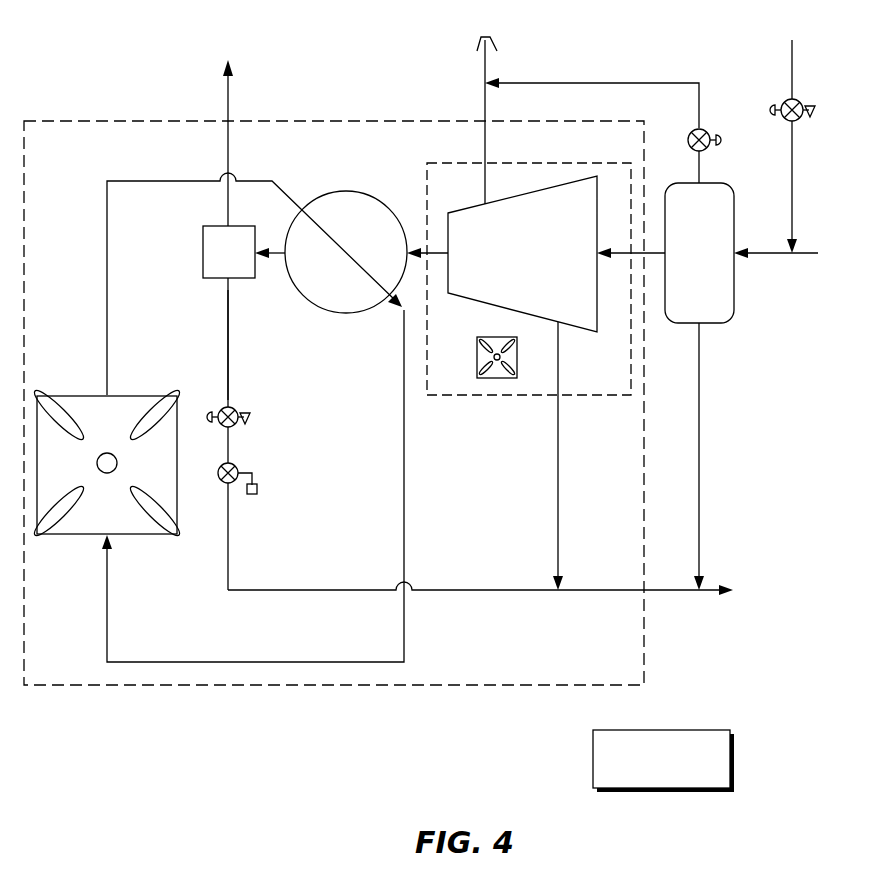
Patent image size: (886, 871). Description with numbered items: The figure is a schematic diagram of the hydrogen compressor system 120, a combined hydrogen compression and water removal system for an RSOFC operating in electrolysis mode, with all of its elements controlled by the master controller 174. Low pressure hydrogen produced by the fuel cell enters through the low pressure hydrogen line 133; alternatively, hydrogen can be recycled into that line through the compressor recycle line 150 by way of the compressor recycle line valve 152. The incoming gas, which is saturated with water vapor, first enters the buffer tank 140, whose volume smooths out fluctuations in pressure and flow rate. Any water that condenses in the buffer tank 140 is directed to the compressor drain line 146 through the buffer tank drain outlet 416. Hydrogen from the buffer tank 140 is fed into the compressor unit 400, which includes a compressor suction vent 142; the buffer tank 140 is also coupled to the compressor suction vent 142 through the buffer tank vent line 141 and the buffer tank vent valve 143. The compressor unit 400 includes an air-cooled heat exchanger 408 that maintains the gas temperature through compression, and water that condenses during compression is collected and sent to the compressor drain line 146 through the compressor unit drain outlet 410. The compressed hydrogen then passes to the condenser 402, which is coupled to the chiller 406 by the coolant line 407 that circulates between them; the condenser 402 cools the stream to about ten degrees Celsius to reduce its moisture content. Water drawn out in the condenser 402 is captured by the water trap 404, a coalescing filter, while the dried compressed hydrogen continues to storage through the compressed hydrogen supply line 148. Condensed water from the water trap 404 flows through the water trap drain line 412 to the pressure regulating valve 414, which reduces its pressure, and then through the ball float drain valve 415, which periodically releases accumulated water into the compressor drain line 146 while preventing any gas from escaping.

The compressor system 120 is at (335, 121).
The low pressure hydrogen line 133 is at (773, 253).
The buffer tank 140 is at (720, 323).
The buffer tank vent line 141 is at (594, 83).
The compressor suction vent 142 is at (476, 47).
The buffer tank vent valve 143 is at (708, 132).
The compressor drain line 146 is at (320, 582).
The compressed hydrogen supply line 148 is at (228, 100).
The compressor recycle line 150 is at (792, 52).
The compressor recycle line valve 152 is at (802, 99).
The master controller 174 is at (593, 758).
The compressor unit 400 is at (548, 186).
The condenser 402 is at (346, 191).
The water trap 404 is at (229, 252).
The chiller 406 is at (140, 395).
The coolant line 407 is at (108, 308).
The air-cooled heat exchanger 408 is at (497, 378).
The compressor unit drain outlet 410 is at (595, 456).
The water trap drain line 412 is at (229, 356).
The pressure regulating valve 414 is at (240, 410).
The ball float drain valve 415 is at (240, 467).
The buffer tank drain outlet 416 is at (700, 472).